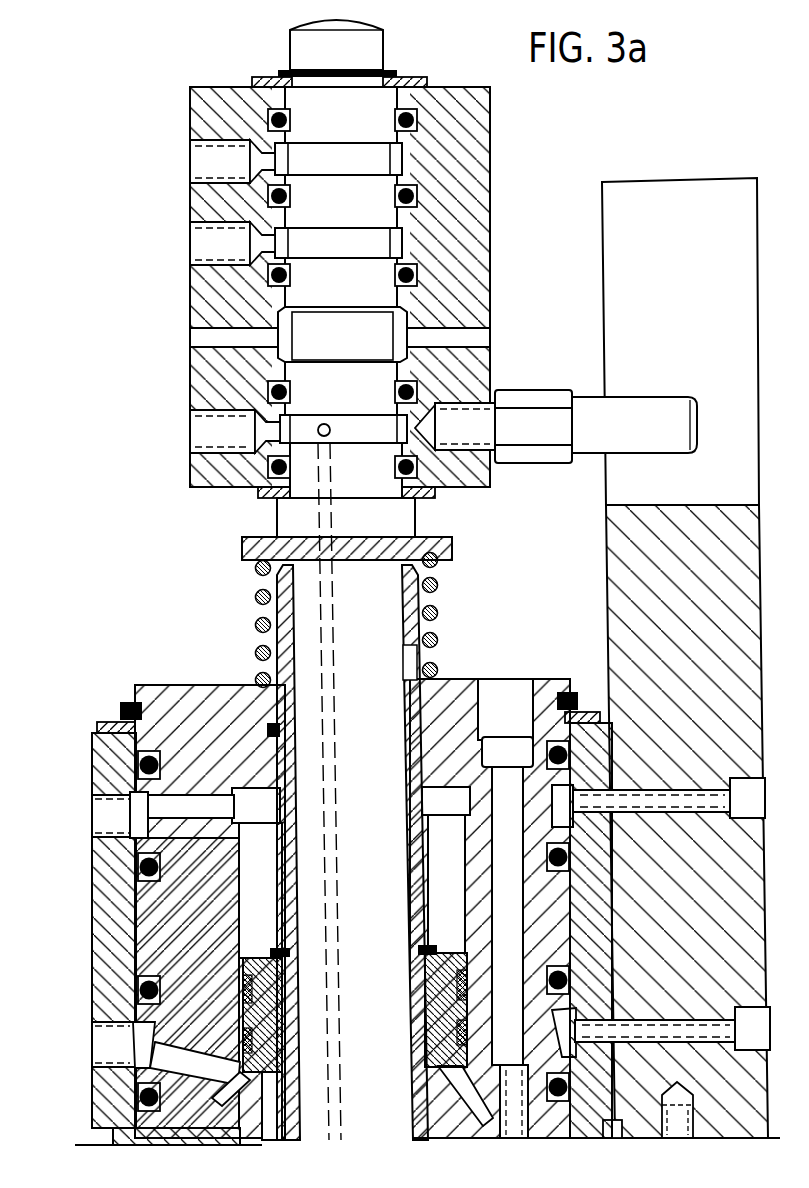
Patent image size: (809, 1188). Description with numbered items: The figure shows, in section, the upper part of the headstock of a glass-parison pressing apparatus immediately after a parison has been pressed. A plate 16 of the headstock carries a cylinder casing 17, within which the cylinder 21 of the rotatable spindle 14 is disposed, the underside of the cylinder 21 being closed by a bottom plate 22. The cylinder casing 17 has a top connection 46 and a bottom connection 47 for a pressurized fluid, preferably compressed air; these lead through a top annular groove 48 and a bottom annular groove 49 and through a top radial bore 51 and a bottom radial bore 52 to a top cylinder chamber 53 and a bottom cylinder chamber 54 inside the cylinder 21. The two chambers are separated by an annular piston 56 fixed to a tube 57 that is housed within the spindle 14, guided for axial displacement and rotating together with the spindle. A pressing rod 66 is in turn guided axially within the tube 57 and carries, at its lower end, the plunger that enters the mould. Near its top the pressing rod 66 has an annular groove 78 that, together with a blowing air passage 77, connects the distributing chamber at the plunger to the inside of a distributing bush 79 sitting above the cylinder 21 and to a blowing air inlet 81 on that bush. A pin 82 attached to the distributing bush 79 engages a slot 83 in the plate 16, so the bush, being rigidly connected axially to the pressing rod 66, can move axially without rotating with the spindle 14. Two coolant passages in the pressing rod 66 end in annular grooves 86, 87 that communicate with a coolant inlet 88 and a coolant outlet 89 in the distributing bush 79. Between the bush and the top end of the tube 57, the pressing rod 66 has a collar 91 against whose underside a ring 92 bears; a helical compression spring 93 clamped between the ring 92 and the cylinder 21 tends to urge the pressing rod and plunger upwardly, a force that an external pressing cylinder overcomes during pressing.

The spindle 14 is at (150, 652).
The plate 16 is at (628, 608).
The cylinder casing 17 is at (110, 908).
The cylinder 21 is at (195, 695).
The bottom plate 22 is at (125, 1142).
The top connection 46 is at (100, 815).
The bottom connection 47 is at (102, 1047).
The top annular groove 48 is at (138, 835).
The bottom annular groove 49 is at (143, 1055).
The top radial bore 51 is at (195, 810).
The bottom radial bore 52 is at (200, 1060).
The top cylinder chamber 53 is at (255, 908).
The bottom cylinder chamber 54 is at (235, 1085).
The annular piston 56 is at (270, 968).
The tube 57 is at (425, 1095).
The pressing rod 66 is at (310, 46).
The blowing air passage 77 is at (333, 598).
The annular groove 78 is at (355, 438).
The distributing bush 79 is at (460, 140).
The blowing air inlet 81 is at (210, 440).
The pin 82 is at (590, 415).
The slot 83 is at (632, 478).
The annular groove 86 is at (340, 150).
The annular groove 87 is at (335, 240).
The coolant inlet 88 is at (215, 160).
The coolant outlet 89 is at (205, 240).
The collar 91 is at (400, 517).
The ring 92 is at (440, 548).
The helical compression spring 93 is at (438, 612).